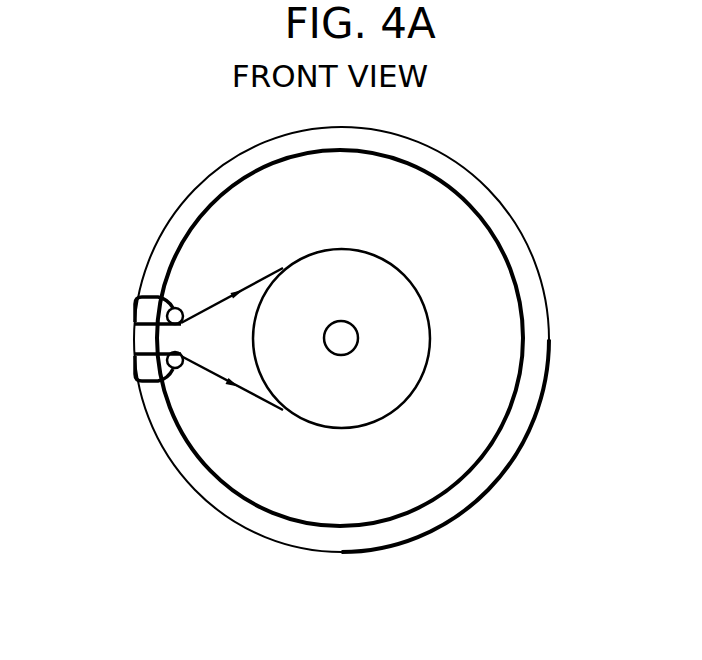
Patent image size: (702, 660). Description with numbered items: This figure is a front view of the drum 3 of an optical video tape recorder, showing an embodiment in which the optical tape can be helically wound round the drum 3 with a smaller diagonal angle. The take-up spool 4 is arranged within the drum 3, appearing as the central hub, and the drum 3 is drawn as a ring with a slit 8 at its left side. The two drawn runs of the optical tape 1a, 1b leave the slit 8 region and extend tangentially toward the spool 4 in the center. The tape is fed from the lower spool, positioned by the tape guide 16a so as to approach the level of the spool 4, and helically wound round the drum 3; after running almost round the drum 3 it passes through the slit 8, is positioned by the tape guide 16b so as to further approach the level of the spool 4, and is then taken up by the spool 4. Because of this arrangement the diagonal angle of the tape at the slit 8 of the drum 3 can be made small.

The tape (first run) 1a is at (258, 281).
The tape (second run) 1b is at (255, 394).
The drum 3 is at (532, 243).
The take-up spool 4 is at (385, 283).
The slit 8 is at (141, 340).
The tape guide 16a is at (142, 297).
The tape guide 16b is at (150, 381).